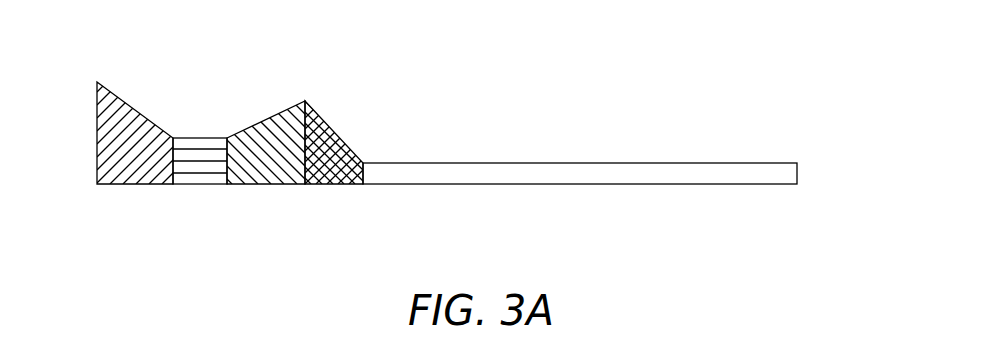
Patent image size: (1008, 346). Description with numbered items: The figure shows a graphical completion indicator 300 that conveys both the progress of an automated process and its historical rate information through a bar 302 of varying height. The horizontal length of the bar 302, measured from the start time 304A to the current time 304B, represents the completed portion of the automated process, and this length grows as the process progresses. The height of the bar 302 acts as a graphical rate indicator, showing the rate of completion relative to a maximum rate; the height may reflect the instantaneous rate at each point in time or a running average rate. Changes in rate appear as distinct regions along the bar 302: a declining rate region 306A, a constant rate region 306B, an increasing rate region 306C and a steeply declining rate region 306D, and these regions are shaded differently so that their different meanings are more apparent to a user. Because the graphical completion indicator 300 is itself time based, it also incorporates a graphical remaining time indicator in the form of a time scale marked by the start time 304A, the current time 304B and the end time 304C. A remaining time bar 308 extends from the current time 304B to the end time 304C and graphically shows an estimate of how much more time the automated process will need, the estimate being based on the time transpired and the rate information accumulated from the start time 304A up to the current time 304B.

The graphical completion indicator 300 is at (462, 164).
The bar 302 is at (265, 135).
The start time 304A is at (103, 242).
The current time 304B is at (373, 240).
The end time 304C is at (783, 240).
The declining rate region 306A is at (128, 105).
The constant rate region 306B is at (200, 184).
The increasing rate region 306C is at (272, 115).
The steeply declining rate region 306D is at (334, 133).
The remaining time bar 308 is at (572, 163).